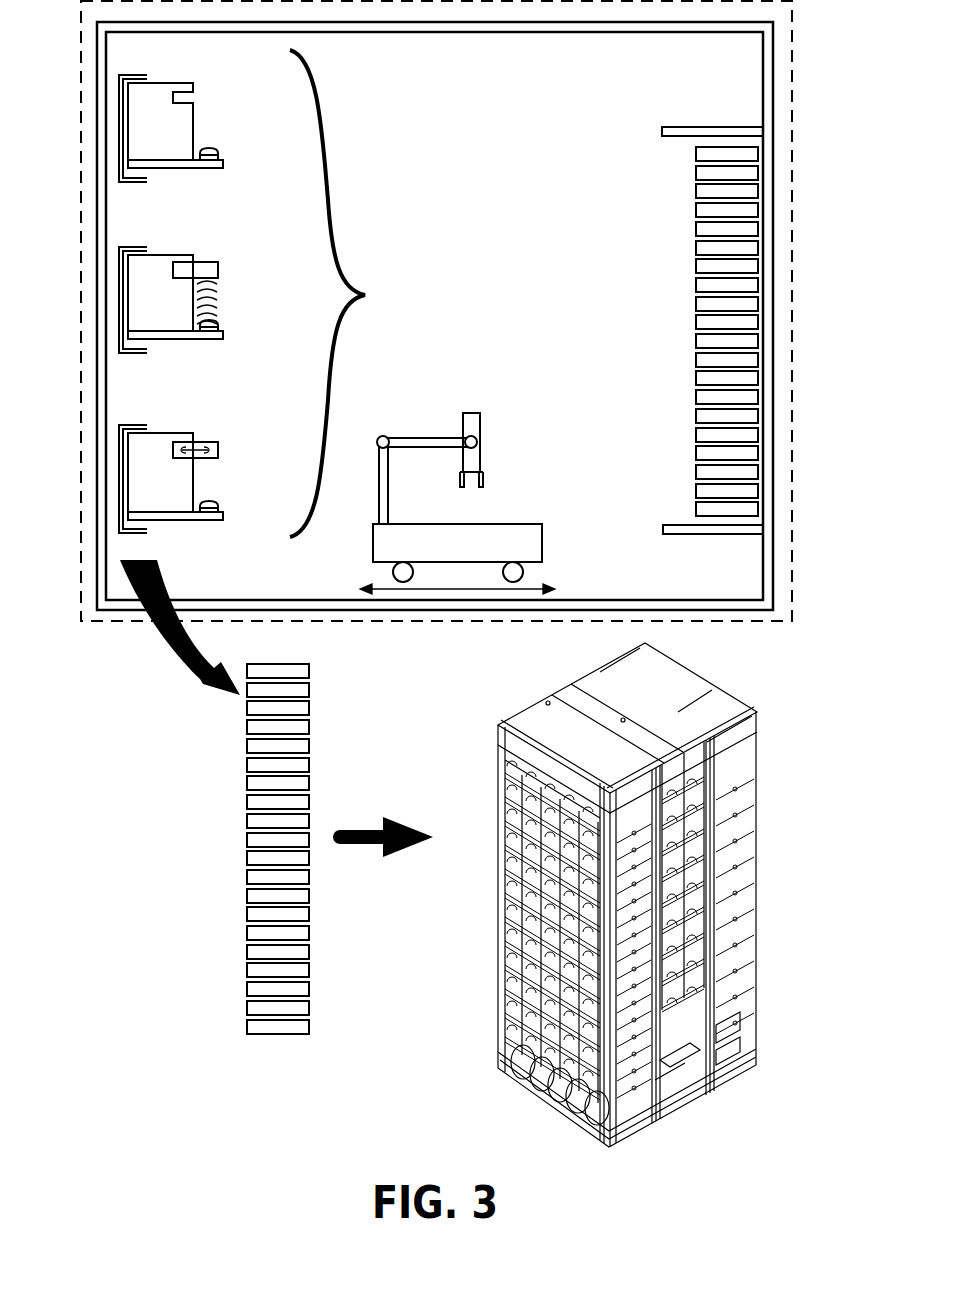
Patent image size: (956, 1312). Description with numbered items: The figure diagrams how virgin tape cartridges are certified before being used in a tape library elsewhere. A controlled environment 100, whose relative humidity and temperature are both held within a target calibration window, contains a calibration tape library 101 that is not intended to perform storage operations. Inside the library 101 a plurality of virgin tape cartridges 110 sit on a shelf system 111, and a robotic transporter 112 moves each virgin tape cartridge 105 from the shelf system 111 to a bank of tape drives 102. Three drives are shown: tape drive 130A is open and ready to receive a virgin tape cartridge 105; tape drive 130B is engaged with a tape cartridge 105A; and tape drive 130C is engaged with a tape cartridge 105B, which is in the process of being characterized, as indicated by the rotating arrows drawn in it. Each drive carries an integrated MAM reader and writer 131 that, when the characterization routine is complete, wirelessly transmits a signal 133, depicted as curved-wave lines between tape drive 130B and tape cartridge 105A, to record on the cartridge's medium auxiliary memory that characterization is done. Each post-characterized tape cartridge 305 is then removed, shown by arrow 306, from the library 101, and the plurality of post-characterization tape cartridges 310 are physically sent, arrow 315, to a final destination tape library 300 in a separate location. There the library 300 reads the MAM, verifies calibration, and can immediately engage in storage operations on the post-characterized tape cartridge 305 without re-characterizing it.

The controlled environment 100 is at (438, 621).
The calibration tape library 101 is at (487, 199).
The plurality of tape drives 102 is at (349, 293).
The virgin tape cartridge 105 is at (697, 488).
The tape cartridge 105A is at (200, 262).
The tape cartridge 105B is at (212, 442).
The plurality of virgin tape cartridges 110 is at (666, 355).
The shelf system 111 is at (717, 535).
The robotic transporter 112 is at (542, 540).
The tape drive 130A is at (162, 83).
The tape drive 130B is at (160, 253).
The tape drive 130C is at (155, 430).
The MAM reader and writer 131 is at (220, 157).
The MAM recording signal 133 is at (242, 308).
The final destination tape library 300 is at (665, 701).
The post-characterized tape cartridge 305 is at (248, 895).
The removal arrow 306 is at (160, 635).
The plurality of post-characterization tape cartridges 310 is at (345, 788).
The shipping arrow 315 is at (345, 845).